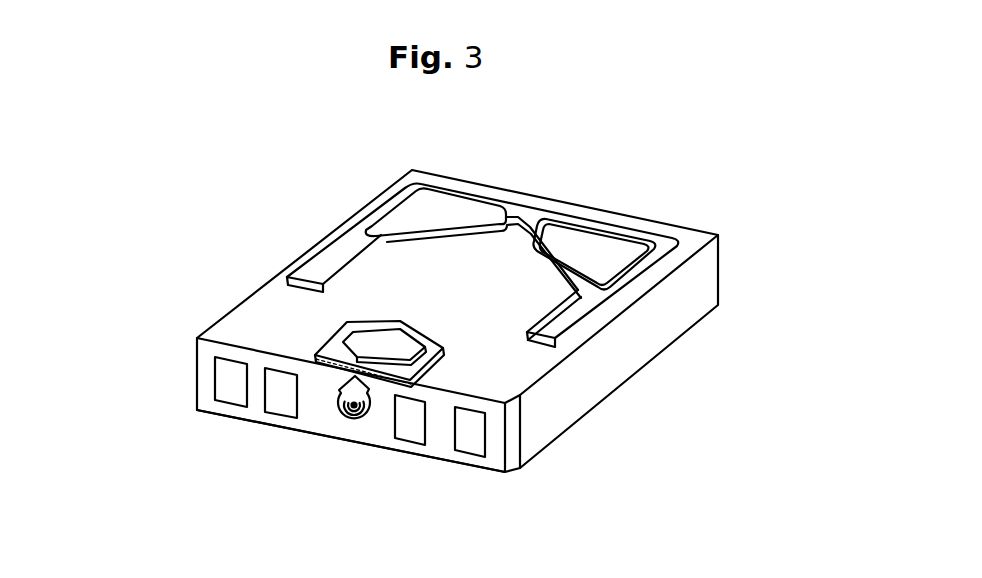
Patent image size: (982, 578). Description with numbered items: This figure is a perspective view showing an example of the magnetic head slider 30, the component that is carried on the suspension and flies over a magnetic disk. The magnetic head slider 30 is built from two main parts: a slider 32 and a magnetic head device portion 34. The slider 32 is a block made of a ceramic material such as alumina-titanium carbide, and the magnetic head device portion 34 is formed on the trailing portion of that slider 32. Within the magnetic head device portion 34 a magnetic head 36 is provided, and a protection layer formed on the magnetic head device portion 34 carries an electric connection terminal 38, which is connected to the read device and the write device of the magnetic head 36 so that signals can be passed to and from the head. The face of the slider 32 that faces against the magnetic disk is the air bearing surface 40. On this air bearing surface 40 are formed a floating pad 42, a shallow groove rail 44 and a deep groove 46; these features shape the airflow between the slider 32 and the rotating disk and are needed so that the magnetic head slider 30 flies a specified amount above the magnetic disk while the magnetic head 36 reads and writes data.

The magnetic head slider 30 is at (299, 186).
The slider 32 is at (537, 416).
The magnetic head device portion 34 is at (513, 477).
The magnetic head 36 is at (352, 421).
The electric connection terminal 38 is at (278, 405).
The air bearing surface 40 is at (542, 199).
The floating pad 42 is at (462, 213).
The shallow groove rail 44 is at (324, 258).
The deep groove 46 is at (260, 308).